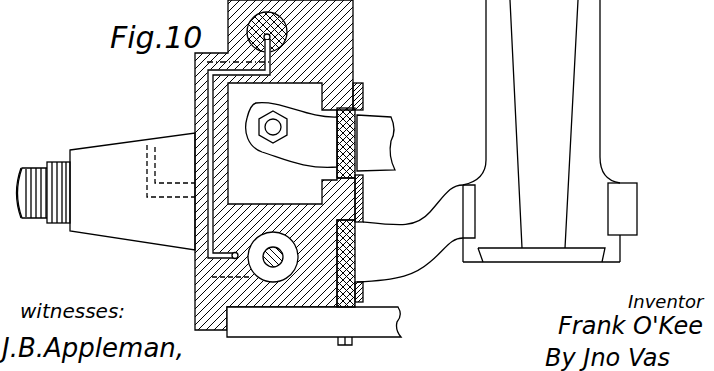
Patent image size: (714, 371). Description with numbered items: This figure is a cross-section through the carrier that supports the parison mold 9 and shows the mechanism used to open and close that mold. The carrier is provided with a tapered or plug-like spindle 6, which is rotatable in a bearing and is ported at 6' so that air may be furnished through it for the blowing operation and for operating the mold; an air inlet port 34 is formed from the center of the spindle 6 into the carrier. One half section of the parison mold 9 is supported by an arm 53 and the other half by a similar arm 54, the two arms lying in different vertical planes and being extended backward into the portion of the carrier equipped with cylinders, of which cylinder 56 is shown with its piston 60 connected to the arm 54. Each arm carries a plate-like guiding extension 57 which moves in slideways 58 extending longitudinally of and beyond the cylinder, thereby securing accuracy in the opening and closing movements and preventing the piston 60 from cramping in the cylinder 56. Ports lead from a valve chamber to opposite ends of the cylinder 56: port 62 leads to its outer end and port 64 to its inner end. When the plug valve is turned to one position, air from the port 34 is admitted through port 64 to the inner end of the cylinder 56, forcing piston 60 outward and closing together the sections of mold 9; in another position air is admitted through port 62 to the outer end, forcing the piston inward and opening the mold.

The spindle 6 is at (106, 191).
The port 6' is at (156, 153).
The parison mold 9 is at (550, 131).
The port 34 is at (390, 11).
The arm 53 is at (387, 140).
The arm 54 is at (416, 233).
The cylinder 56 is at (277, 282).
The plate-like guiding extension 57 is at (372, 252).
The slideways 58 is at (390, 287).
The piston 60 is at (253, 23).
The port 62 is at (210, 84).
The port 64 is at (212, 262).